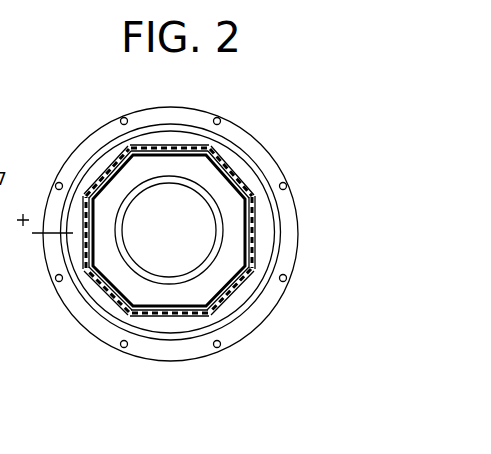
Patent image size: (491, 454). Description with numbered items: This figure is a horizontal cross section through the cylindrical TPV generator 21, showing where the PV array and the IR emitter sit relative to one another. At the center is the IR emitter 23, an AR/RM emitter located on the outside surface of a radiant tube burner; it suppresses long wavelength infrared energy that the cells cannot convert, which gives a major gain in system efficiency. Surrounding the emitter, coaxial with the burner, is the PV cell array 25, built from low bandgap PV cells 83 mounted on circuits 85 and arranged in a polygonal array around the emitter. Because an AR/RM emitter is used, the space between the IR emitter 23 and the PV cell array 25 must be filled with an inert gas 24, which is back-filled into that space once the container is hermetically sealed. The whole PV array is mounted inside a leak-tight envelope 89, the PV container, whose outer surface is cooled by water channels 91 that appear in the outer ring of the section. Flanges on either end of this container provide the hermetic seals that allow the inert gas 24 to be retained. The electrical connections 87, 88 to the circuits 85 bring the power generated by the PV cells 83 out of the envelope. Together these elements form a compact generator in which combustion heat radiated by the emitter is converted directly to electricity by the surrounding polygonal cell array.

The cylindrical TPV generator 21 is at (255, 113).
The IR emitter 23 is at (207, 193).
The inert gas 24 is at (223, 272).
The PV cell array 25 is at (248, 228).
The low bandgap PV cells 83 is at (173, 159).
The circuits 85 is at (166, 153).
The electrical connection 87 is at (102, 172).
The electrical connection 88 is at (32, 233).
The leak-tight envelope 89 is at (252, 271).
The water channels 91 is at (253, 212).